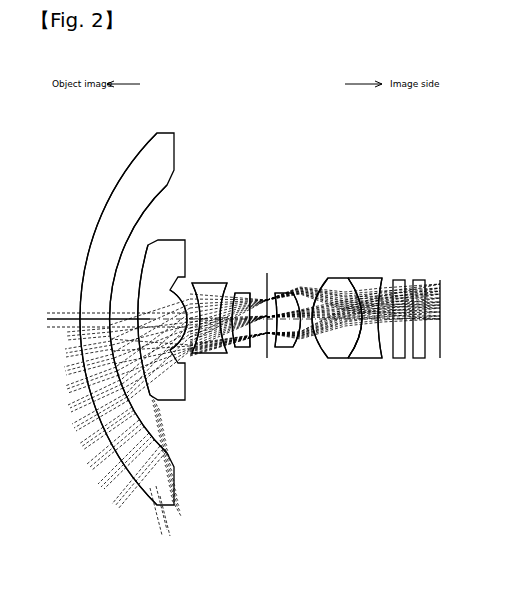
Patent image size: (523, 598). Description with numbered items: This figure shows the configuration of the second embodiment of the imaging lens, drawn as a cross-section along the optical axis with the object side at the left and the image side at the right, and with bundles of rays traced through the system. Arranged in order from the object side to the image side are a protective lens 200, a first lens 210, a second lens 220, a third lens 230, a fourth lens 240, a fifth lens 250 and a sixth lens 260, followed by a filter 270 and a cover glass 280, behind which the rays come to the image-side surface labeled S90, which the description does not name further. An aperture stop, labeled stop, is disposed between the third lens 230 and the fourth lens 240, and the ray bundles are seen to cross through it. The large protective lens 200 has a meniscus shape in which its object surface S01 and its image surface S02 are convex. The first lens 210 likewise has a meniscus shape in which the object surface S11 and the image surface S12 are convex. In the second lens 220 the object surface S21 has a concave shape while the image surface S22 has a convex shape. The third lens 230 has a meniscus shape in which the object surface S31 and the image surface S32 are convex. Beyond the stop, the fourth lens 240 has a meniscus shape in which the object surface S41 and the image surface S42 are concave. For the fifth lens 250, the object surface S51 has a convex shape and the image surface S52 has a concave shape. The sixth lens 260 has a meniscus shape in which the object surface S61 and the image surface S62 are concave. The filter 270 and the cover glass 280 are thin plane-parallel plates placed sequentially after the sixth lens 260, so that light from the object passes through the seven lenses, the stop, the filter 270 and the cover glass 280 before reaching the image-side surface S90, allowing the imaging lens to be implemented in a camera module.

The protective lens 200 is at (175, 498).
The object surface of the protective lens S01 is at (135, 158).
The image surface of the protective lens S02 is at (166, 186).
The first lens 210 is at (177, 401).
The object surface of the first lens S11 is at (149, 243).
The image surface of the first lens S12 is at (187, 241).
The second lens 220 is at (213, 354).
The object surface of the second lens S21 is at (192, 355).
The image surface of the second lens S22 is at (227, 352).
The third lens 230 is at (248, 349).
The object surface of the third lens S31 is at (235, 350).
The image surface of the third lens S32 is at (251, 349).
The aperture stop is at (267, 353).
The fourth lens 240 is at (290, 349).
The object surface of the fourth lens S41 is at (274, 292).
The image surface of the fourth lens S42 is at (294, 292).
The fifth lens 250 is at (336, 359).
The object surface of the fifth lens S51 is at (326, 358).
The image surface of the fifth lens S52 is at (352, 358).
The sixth lens 260 is at (365, 359).
The object surface of the sixth lens S61 is at (348, 278).
The image surface of the sixth lens S62 is at (382, 278).
The filter 270 is at (397, 359).
The cover glass 280 is at (418, 359).
The image plane S90 is at (440, 358).